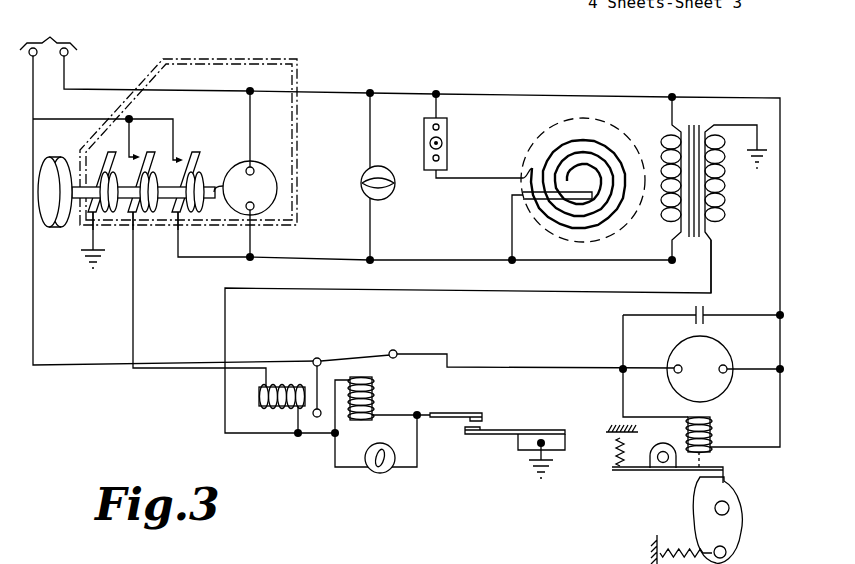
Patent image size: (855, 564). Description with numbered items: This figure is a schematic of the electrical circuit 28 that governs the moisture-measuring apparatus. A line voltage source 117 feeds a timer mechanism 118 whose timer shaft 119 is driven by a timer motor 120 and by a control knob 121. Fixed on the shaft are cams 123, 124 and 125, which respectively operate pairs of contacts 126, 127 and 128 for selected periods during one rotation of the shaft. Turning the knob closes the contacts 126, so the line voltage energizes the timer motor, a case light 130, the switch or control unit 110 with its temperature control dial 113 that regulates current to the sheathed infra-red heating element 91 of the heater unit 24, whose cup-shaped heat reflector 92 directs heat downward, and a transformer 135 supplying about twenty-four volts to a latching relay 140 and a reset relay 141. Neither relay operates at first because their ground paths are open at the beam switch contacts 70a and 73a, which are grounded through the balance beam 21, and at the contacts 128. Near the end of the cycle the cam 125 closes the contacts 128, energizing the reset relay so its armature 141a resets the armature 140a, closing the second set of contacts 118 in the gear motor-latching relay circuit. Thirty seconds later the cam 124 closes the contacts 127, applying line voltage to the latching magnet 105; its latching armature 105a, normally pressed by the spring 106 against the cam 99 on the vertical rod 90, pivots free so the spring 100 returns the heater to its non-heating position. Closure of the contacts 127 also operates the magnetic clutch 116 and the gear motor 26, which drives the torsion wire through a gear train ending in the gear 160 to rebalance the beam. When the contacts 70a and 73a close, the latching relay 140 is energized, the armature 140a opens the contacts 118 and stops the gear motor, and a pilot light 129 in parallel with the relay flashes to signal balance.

The line voltage source 117 is at (60, 28).
The timer mechanism 118 is at (242, 206).
The timer shaft 119 is at (220, 180).
The timer motor 120 is at (283, 153).
The control knob 121 is at (50, 224).
The cam 123 is at (190, 225).
The cam 124 is at (140, 222).
The cam 125 is at (100, 222).
The pair of contacts 126 is at (199, 157).
The pair of contacts 127 is at (163, 143).
The pair of contacts 128 is at (102, 148).
The case light 130 is at (364, 176).
The switch or control unit 110 is at (448, 143).
The temperature control dial 113 is at (430, 145).
The sheathed infra-red heating element 91 is at (546, 136).
The cup-shaped heat reflector 92 is at (631, 138).
The heater unit 24 is at (592, 191).
The transformer 135 is at (723, 184).
The magnetic clutch 116 is at (706, 308).
The gear motor 26 is at (710, 379).
The electrical circuit 28 is at (557, 333).
The latching magnet 105 is at (704, 438).
The latching armature 105a is at (722, 470).
The spring 106 is at (618, 462).
The vertical rod 90 is at (729, 506).
The cam 99 is at (742, 522).
The spring 100 is at (668, 548).
The gear 160 is at (622, 549).
The reset relay 141 is at (272, 410).
The armature 141a is at (314, 376).
The armature 140a is at (363, 357).
The latching relay 140 is at (375, 399).
The pilot light 129 is at (376, 473).
The contact 73a is at (490, 403).
The contact 70a is at (465, 432).
The balance beam 21 is at (566, 443).